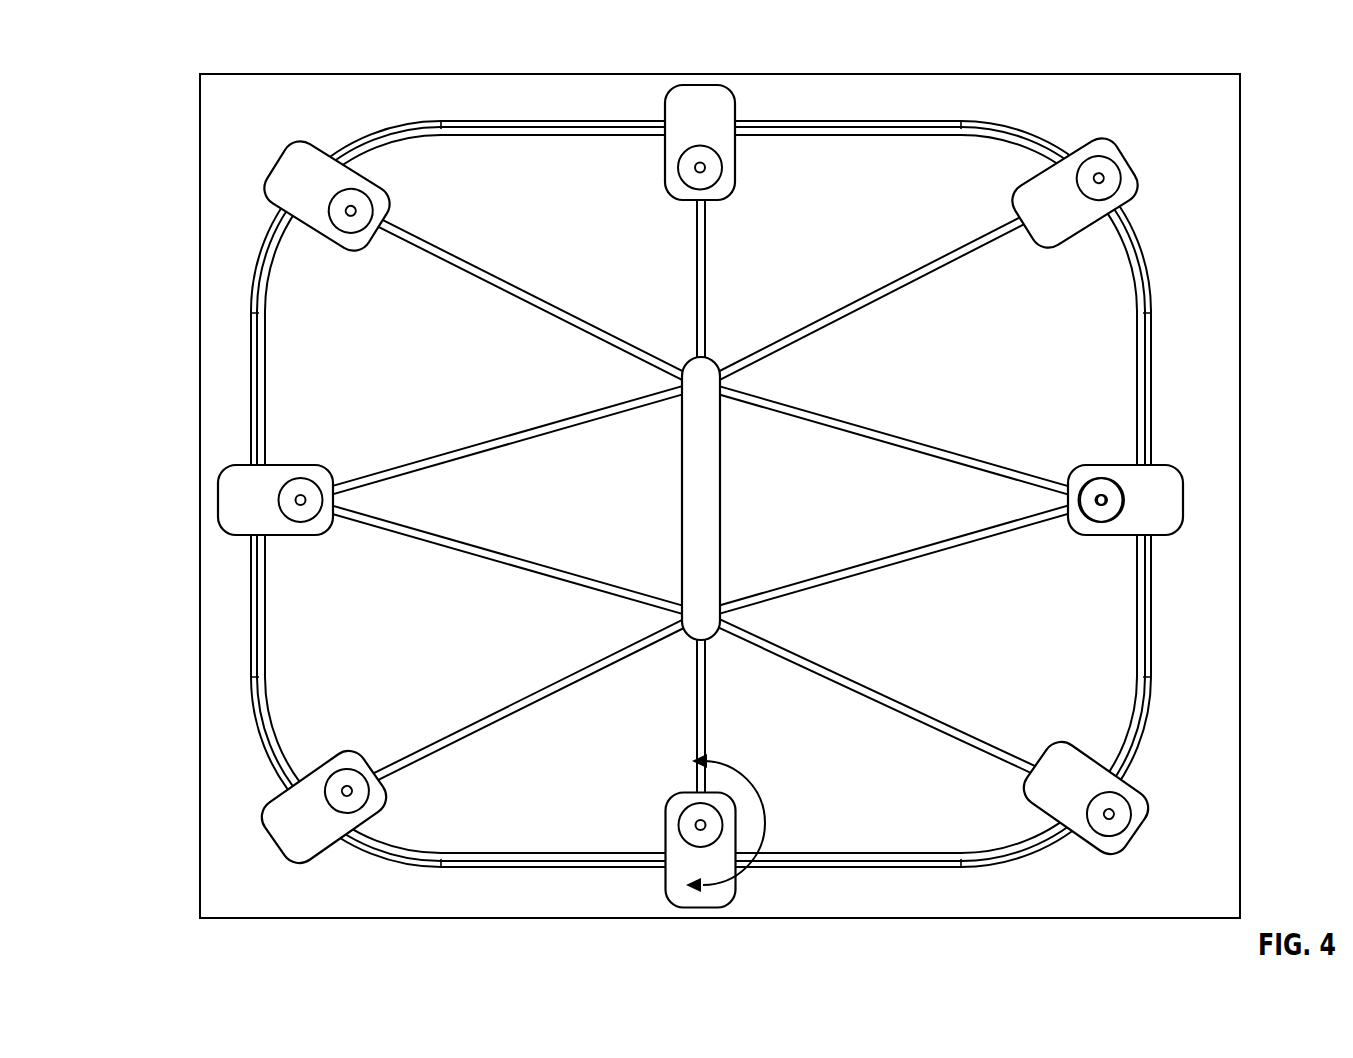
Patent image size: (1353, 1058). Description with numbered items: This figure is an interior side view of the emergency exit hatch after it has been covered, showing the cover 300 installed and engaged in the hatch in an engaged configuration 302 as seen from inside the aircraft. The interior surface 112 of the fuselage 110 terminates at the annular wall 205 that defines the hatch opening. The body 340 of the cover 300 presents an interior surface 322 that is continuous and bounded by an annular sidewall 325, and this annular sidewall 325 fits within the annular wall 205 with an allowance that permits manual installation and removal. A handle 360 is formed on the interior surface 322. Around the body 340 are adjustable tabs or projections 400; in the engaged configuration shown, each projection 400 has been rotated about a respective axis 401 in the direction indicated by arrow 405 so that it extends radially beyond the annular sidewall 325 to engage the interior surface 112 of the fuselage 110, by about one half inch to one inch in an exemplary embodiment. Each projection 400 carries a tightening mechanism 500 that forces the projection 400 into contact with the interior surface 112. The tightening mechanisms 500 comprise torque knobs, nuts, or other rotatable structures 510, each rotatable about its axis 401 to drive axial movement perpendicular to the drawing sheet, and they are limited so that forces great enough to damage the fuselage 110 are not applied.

The engaged configuration 302 is at (148, 80).
The fuselage 110 is at (218, 168).
The interior surface 112 is at (215, 318).
The annular wall 205 is at (243, 462).
The cover 300 is at (739, 494).
The interior surface 322 is at (1044, 366).
The annular sidewall 325 is at (1151, 640).
The body 340 is at (1054, 648).
The handle 360 is at (720, 443).
The projection 400 is at (1139, 504).
The axis 401 is at (699, 825).
The arrow 405 is at (768, 826).
The tightening mechanism 500 is at (1101, 487).
The rotatable structure 510 is at (1040, 205).